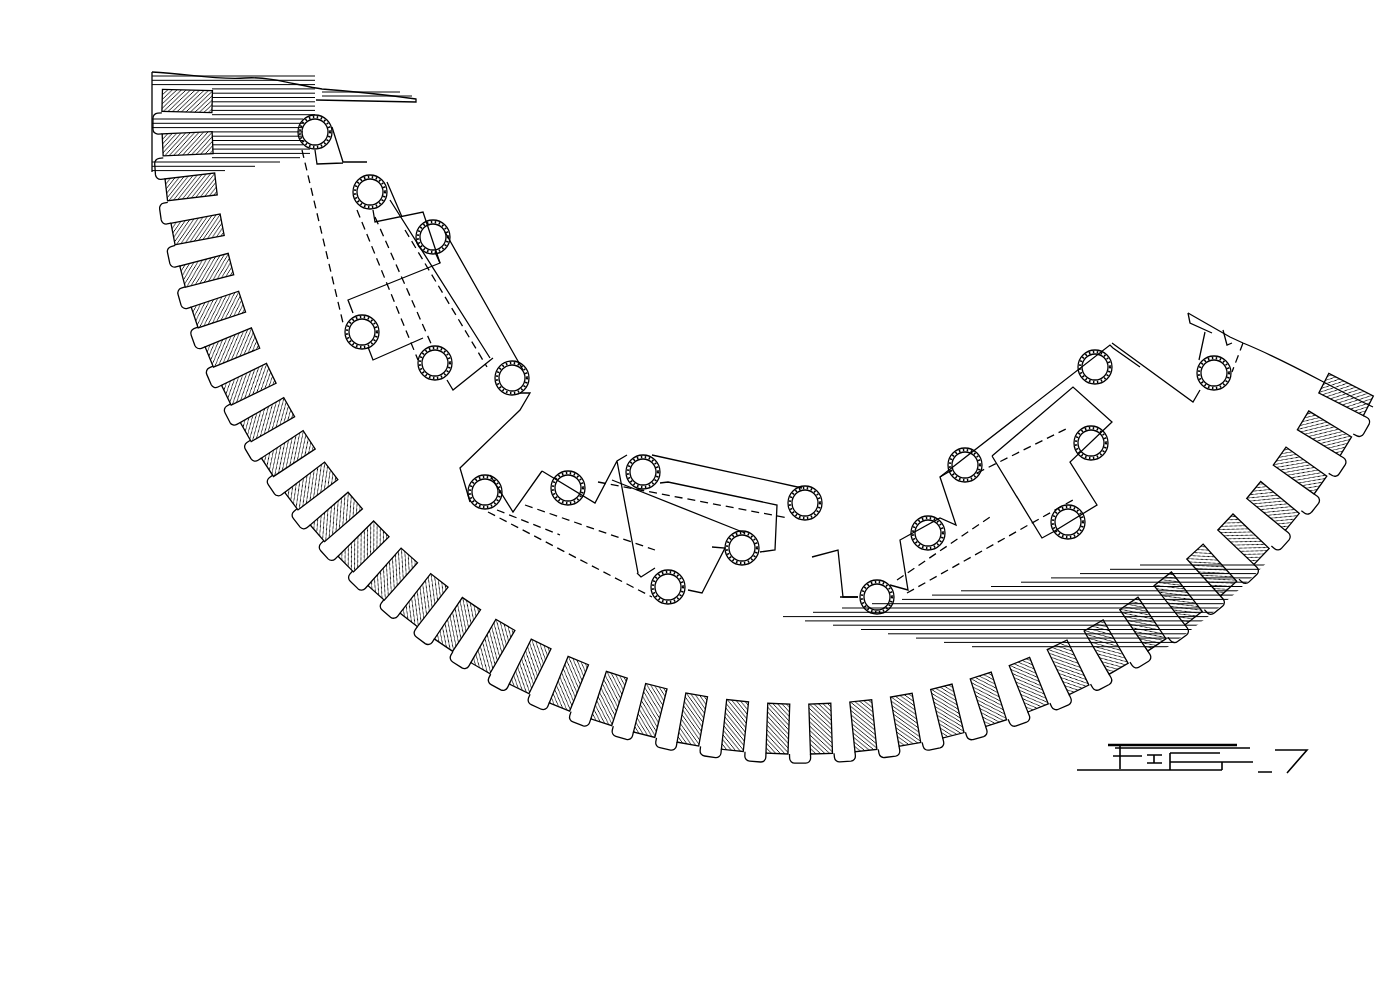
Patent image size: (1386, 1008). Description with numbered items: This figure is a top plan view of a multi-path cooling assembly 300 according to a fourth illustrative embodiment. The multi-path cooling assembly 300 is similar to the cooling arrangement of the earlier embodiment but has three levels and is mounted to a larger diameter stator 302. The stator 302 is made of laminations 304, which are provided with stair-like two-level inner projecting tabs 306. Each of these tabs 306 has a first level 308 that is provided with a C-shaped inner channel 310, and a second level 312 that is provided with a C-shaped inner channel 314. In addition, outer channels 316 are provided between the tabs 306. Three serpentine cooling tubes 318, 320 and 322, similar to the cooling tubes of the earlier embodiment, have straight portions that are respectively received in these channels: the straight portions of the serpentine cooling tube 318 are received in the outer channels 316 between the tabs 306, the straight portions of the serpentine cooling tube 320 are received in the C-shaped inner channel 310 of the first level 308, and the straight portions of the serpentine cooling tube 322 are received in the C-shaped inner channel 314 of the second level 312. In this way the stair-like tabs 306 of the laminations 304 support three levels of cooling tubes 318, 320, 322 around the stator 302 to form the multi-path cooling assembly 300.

The multi-path cooling assembly 300 is at (732, 320).
The stator 302 is at (853, 763).
The laminations 304 is at (692, 640).
The inner projecting tabs 306 is at (840, 565).
The first level 308 is at (762, 532).
The C-shaped inner channel 310 is at (730, 528).
The second level 312 is at (838, 550).
The C-shaped inner channel 314 is at (812, 556).
The outer channels 316 is at (655, 597).
The serpentine cooling tube 318 is at (518, 478).
The serpentine cooling tube 320 is at (590, 466).
The serpentine cooling tube 322 is at (683, 451).